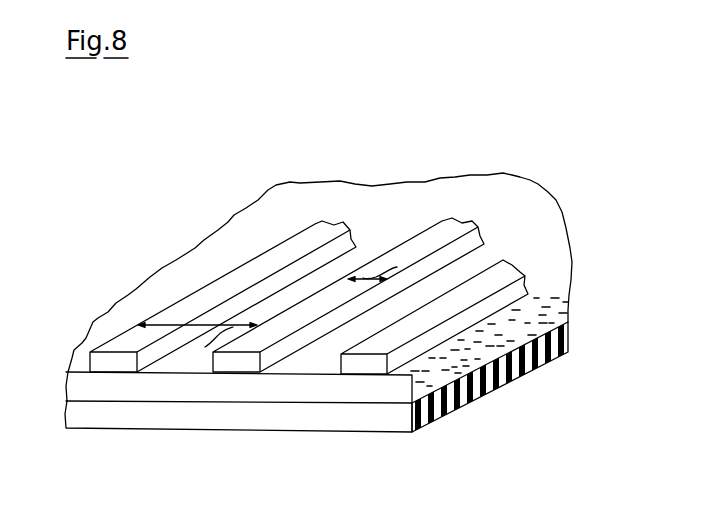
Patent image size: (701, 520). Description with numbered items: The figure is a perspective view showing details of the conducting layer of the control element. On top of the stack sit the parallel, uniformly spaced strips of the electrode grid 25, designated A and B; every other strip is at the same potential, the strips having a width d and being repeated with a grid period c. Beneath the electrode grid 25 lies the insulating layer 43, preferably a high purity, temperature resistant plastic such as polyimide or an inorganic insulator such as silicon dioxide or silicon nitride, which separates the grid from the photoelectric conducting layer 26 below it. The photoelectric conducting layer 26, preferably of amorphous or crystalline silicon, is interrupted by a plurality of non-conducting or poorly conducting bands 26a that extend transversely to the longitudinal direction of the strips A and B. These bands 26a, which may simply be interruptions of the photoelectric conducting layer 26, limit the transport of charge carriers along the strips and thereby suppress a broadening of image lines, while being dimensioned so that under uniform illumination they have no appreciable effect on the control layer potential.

The electrode grid 25 is at (517, 163).
The photoelectric conducting layer 26 is at (153, 426).
The non-conducting or poorly conducting bands 26a is at (440, 418).
The insulating layer 43 is at (66, 389).